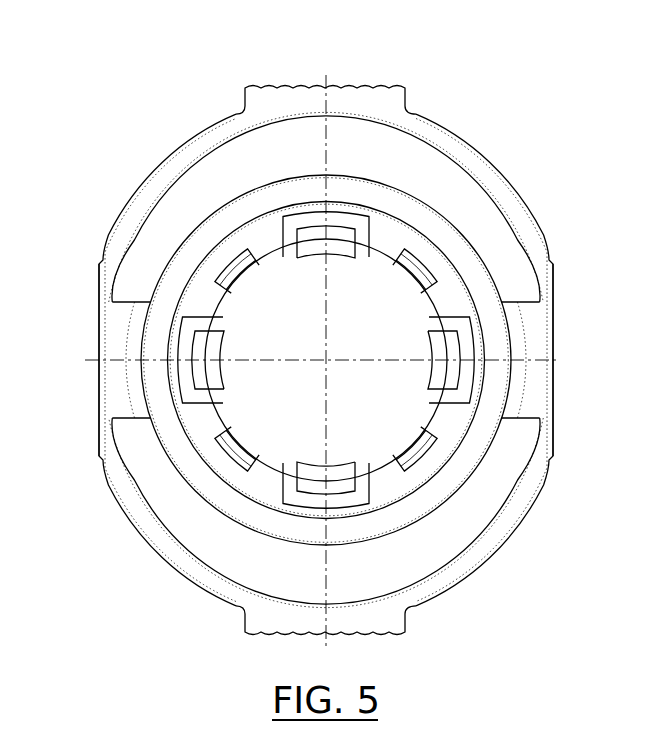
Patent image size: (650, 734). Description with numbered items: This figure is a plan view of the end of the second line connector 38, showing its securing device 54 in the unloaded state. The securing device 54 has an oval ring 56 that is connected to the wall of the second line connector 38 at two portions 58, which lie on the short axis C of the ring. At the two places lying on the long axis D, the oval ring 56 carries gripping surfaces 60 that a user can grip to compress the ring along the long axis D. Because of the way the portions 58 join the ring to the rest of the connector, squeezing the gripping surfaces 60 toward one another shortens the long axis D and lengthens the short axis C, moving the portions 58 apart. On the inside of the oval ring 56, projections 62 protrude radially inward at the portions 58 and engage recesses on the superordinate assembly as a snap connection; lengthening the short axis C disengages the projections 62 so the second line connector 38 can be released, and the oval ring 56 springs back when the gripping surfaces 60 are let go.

The second line connector 38 is at (327, 346).
The securing device 54 is at (317, 346).
The oval ring 56 is at (170, 153).
The portions 58 is at (104, 346).
The gripping surfaces 60 is at (383, 100).
The projections 62 is at (120, 376).
The long axis D is at (327, 86).
The short axis C is at (563, 358).